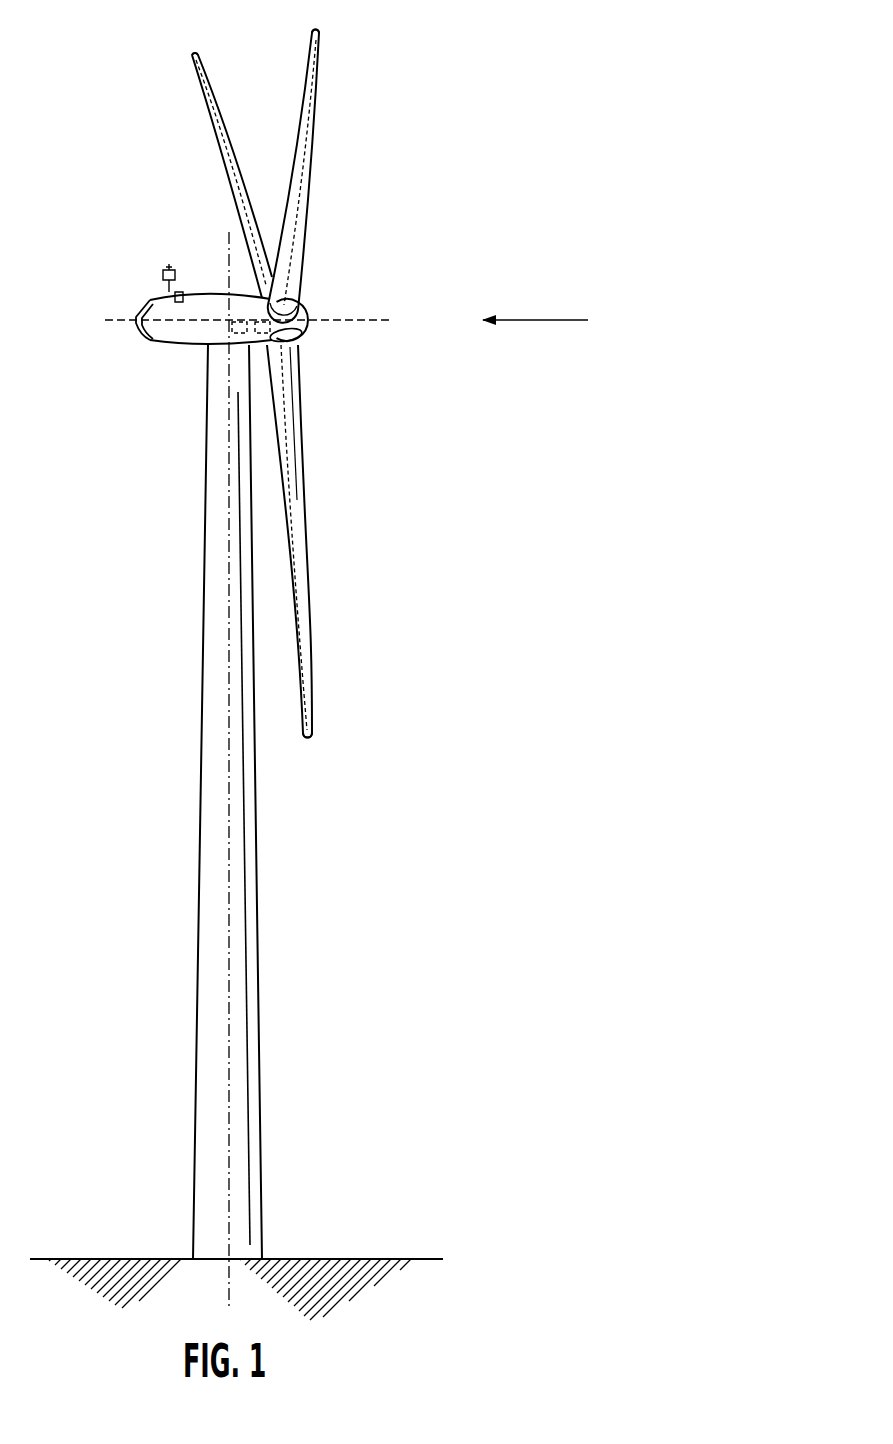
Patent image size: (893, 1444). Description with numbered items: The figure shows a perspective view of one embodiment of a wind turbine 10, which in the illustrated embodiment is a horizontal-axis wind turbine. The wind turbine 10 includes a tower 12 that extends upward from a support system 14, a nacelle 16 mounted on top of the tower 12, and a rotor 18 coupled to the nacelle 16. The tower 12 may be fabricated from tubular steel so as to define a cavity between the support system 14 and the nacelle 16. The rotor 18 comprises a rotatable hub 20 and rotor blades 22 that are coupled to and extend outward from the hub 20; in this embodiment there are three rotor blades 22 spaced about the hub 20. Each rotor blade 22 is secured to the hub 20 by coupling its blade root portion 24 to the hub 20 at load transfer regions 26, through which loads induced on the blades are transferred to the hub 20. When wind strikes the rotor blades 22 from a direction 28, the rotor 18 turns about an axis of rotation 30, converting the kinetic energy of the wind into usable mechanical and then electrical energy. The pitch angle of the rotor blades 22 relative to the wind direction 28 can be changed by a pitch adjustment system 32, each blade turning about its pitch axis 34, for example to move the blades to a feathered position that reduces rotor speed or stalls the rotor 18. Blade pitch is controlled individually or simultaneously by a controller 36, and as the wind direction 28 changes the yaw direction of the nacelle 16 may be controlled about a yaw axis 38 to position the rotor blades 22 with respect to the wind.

The wind turbine 10 is at (415, 122).
The tower 12 is at (243, 769).
The support system 14 is at (112, 1258).
The nacelle 16 is at (197, 359).
The rotor 18 is at (315, 240).
The rotatable hub 20 is at (300, 300).
The rotor blade 22 is at (237, 157).
The blade root portion 24 is at (318, 541).
The load transfer region 26 is at (298, 336).
The direction 28 is at (527, 320).
The axis of rotation 30 is at (366, 320).
The pitch adjustment system 32 is at (292, 362).
The pitch axis 34 is at (192, 56).
The controller 36 is at (236, 337).
The yaw axis 38 is at (229, 943).